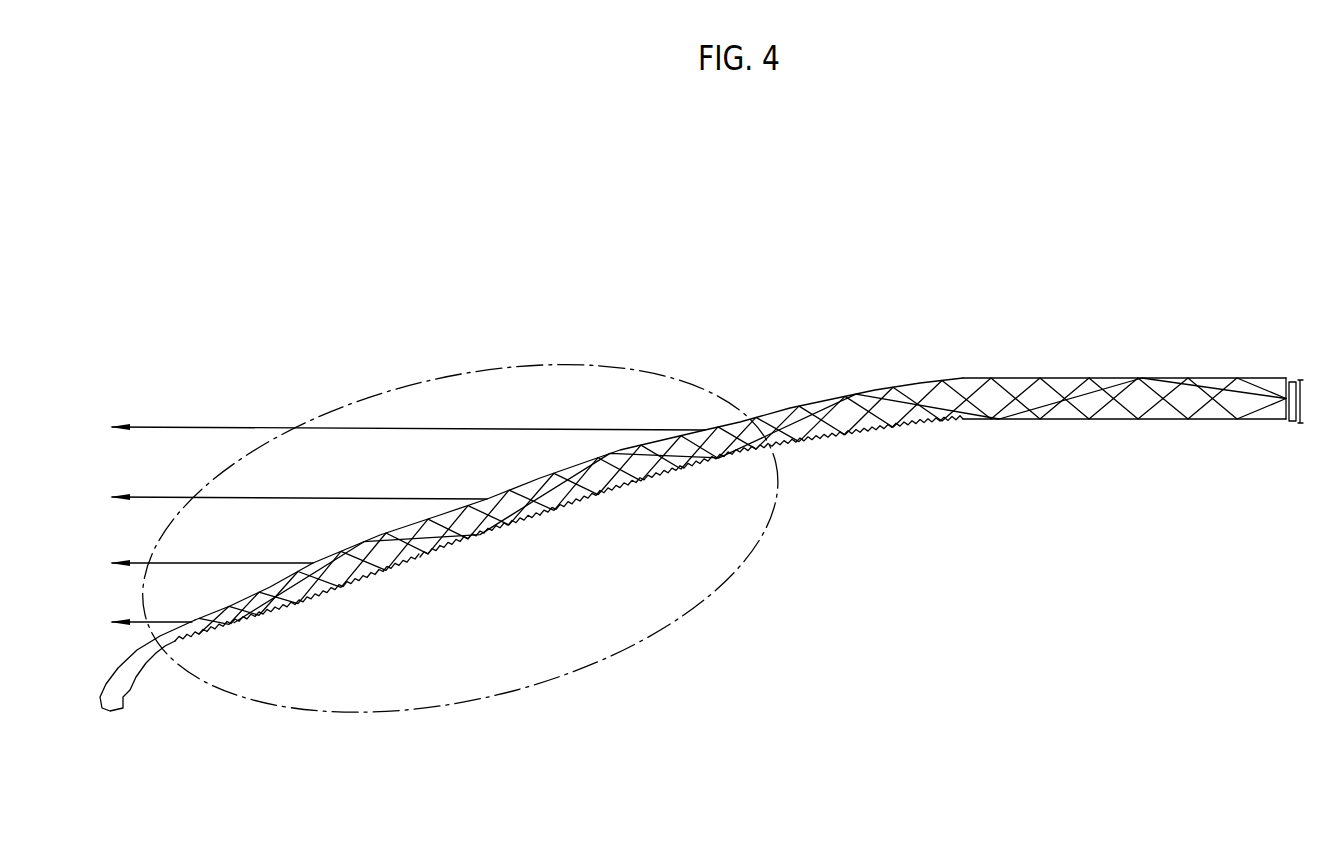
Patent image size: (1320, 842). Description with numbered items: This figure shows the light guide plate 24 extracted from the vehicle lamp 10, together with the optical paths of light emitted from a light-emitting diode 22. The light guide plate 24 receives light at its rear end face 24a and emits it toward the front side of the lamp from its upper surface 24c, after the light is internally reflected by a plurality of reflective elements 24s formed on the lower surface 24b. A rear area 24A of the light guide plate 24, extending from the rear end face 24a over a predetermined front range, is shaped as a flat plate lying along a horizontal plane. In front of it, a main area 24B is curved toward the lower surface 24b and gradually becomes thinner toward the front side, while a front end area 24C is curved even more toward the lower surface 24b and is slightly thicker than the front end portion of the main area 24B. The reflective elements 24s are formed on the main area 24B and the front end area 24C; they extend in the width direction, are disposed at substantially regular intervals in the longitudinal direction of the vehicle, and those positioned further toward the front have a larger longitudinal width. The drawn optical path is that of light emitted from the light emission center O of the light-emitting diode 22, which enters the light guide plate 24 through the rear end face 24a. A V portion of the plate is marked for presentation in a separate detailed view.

The vehicle lamp 10 is at (513, 245).
The light-emitting diode 22 is at (1290, 377).
The light guide plate 24 is at (697, 524).
The rear end face 24a is at (1295, 422).
The rear area 24A is at (1129, 476).
The lower surface 24b is at (798, 445).
The main area 24B is at (569, 489).
The upper surface 24c is at (790, 407).
The front end area 24C is at (137, 687).
The reflective element 24s is at (467, 535).
The V portion V is at (340, 400).
The light emission center O is at (1257, 420).